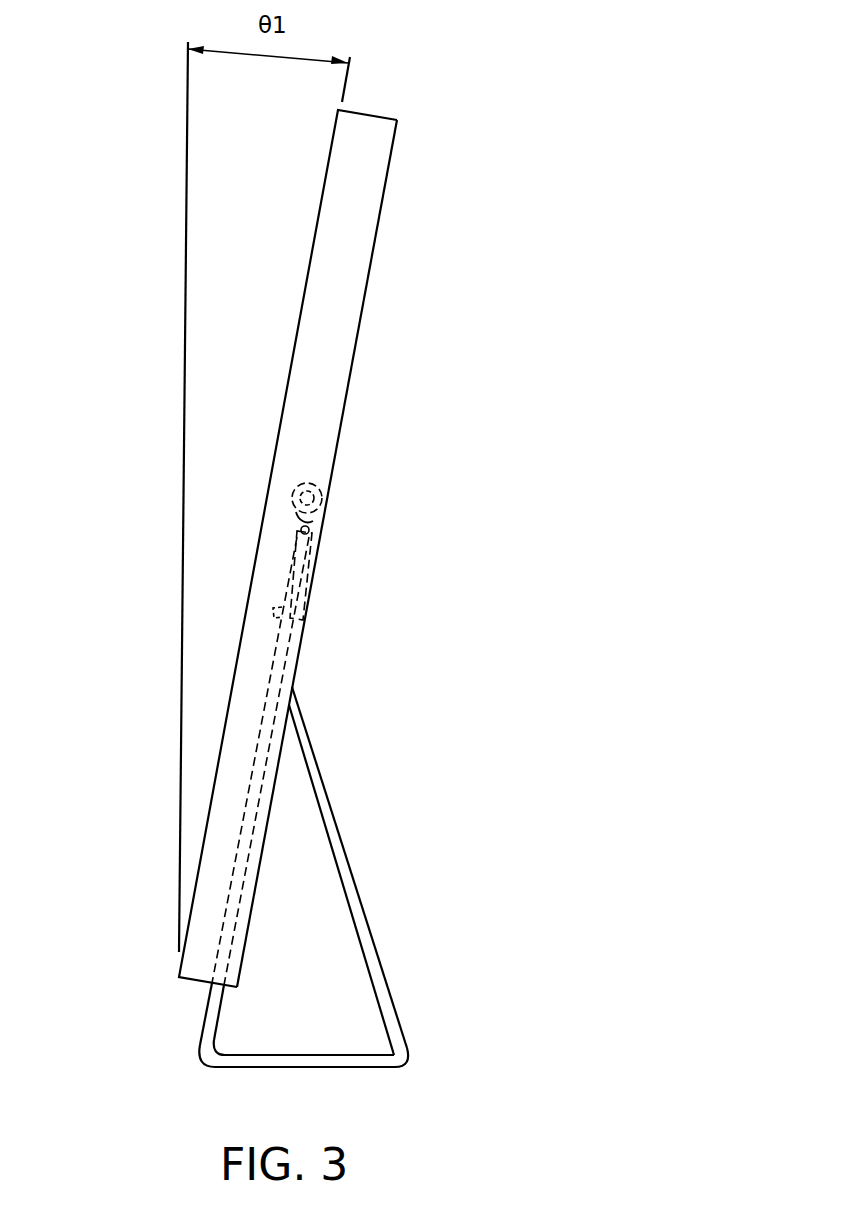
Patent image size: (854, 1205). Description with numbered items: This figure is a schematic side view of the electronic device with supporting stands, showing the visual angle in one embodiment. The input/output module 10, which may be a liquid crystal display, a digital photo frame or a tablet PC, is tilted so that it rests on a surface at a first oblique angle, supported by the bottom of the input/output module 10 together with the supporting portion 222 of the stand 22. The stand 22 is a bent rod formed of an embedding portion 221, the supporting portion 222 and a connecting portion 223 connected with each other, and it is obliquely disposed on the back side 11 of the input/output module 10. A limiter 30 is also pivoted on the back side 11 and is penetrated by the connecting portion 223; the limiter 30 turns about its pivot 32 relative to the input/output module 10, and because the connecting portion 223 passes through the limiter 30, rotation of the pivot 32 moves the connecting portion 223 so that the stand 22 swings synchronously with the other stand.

The input/output module 10 is at (373, 126).
The back side 11 is at (375, 233).
The stand 22 is at (278, 836).
The embedding portion 221 is at (233, 913).
The supporting portion 222 is at (297, 1065).
The connecting portion 223 is at (378, 958).
The limiter 30 is at (312, 557).
The pivot 32 is at (312, 483).